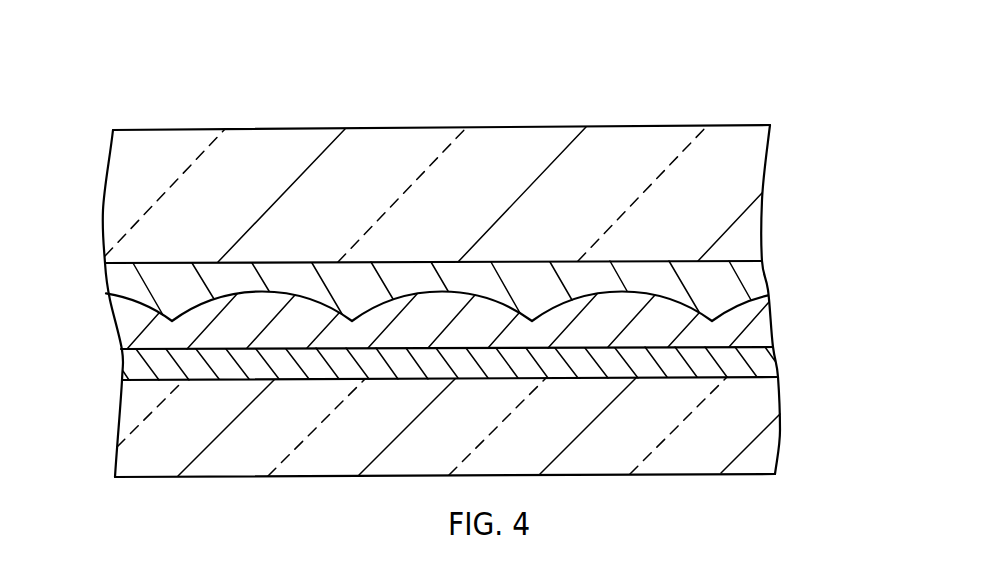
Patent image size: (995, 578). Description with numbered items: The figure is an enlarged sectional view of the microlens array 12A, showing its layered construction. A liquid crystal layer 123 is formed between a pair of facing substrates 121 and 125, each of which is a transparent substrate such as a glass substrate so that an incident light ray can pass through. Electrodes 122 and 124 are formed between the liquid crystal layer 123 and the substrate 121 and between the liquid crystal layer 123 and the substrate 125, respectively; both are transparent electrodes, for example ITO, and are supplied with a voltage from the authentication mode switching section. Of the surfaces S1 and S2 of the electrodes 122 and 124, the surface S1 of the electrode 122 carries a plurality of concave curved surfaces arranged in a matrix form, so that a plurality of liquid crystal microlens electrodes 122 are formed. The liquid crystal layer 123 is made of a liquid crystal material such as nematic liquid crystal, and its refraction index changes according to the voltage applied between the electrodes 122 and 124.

The microlens array 12A is at (755, 75).
The substrate 121 is at (752, 192).
The electrode 122 is at (753, 277).
The liquid crystal layer 123 is at (755, 323).
The electrode 124 is at (770, 357).
The substrate 125 is at (760, 415).
The surface S1 is at (143, 306).
The surface S2 is at (138, 348).